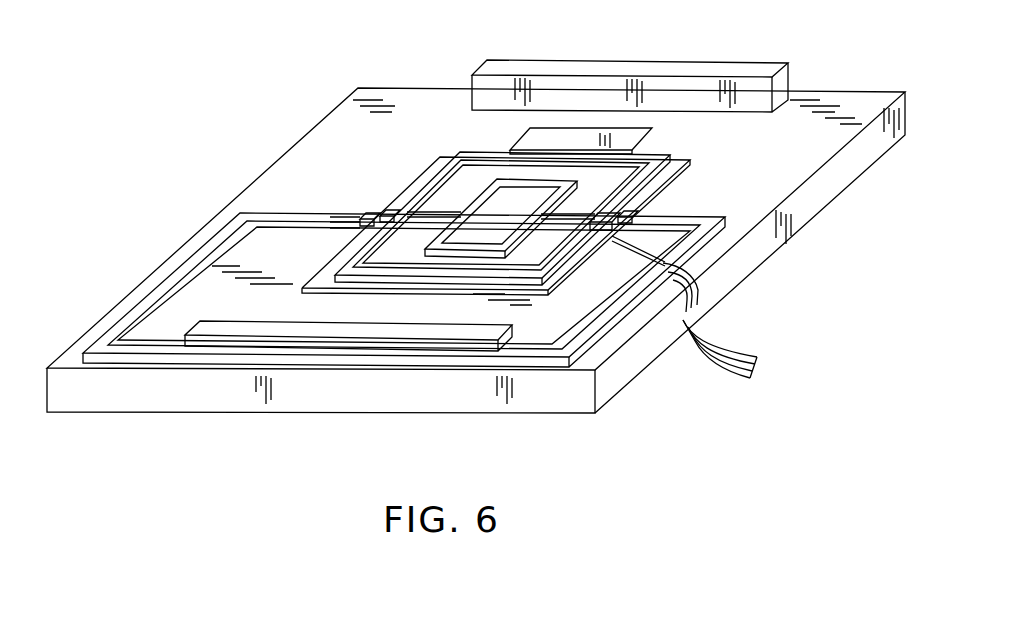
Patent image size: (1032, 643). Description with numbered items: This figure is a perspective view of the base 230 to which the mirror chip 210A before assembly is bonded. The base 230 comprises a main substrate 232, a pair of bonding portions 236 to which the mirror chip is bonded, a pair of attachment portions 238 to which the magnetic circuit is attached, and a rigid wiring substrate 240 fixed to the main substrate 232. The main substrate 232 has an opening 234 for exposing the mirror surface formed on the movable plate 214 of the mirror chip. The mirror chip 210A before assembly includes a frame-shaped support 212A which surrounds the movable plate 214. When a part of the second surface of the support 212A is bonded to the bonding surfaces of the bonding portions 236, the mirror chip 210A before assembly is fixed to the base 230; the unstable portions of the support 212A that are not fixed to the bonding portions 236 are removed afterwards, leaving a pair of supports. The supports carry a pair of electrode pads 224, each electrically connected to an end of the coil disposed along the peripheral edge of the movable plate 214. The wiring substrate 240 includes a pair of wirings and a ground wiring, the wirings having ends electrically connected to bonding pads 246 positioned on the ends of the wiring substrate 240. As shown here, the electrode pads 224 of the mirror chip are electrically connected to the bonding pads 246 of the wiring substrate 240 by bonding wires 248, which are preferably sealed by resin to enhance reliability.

The base 230 is at (297, 130).
The main substrate 232 is at (743, 258).
The wiring substrate 240 is at (178, 268).
The attachment portions 238 is at (676, 66).
The opening 234 is at (575, 136).
The bonding portions 236 is at (582, 253).
The mirror chip before assembly 210A is at (468, 145).
The frame-shaped support 212A is at (641, 168).
The movable plate 214 is at (524, 196).
The electrode pads 224 is at (400, 212).
The bonding pads 246 is at (356, 228).
The bonding wires 248 is at (387, 212).